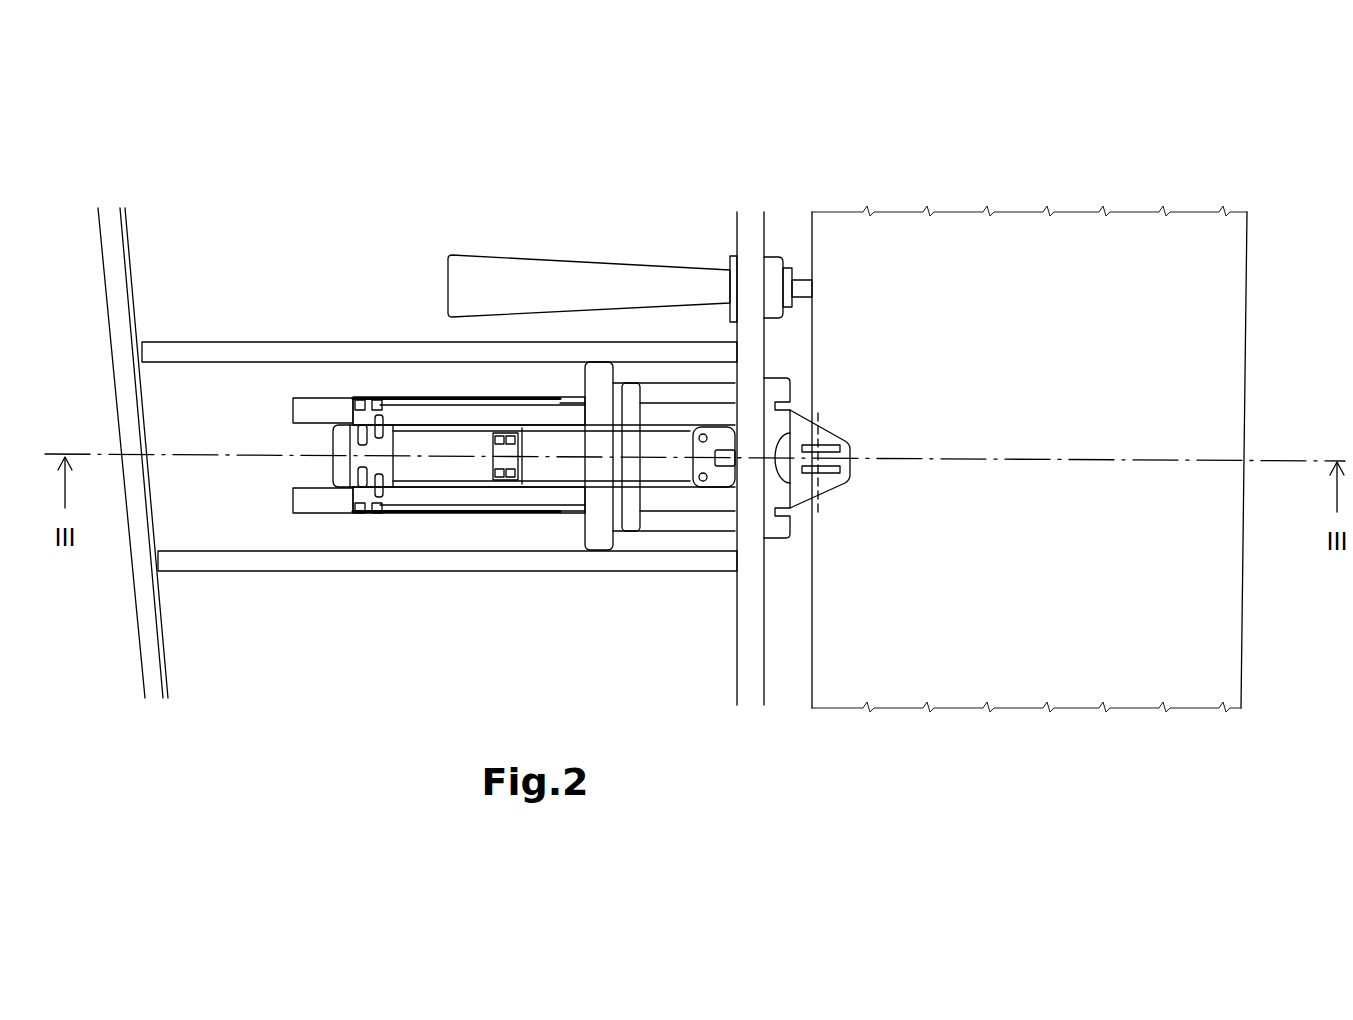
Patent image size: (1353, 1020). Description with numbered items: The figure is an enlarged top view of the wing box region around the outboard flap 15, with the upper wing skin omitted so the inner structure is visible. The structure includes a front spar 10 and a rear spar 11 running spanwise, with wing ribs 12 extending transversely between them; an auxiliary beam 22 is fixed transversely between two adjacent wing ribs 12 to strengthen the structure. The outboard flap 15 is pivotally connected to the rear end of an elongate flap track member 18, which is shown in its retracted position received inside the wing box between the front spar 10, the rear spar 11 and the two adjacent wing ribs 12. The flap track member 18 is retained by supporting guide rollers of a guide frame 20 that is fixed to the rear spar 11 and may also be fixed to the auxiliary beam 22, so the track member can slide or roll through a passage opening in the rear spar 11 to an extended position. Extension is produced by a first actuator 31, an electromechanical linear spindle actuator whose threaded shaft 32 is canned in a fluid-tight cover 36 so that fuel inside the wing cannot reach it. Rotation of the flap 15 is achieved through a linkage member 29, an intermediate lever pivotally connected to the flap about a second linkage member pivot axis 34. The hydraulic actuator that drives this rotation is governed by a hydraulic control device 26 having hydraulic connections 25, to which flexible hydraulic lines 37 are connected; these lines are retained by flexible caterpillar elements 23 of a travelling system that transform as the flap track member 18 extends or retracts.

The front spar 10 is at (147, 632).
The rear spar 11 is at (743, 663).
The wing ribs 12 is at (203, 352).
The outboard flap 15 is at (1128, 240).
The flap track member 18 is at (403, 415).
The guide frame 20 is at (630, 510).
The auxiliary beam 22 is at (600, 522).
The flexible caterpillar elements 23 is at (308, 413).
The hydraulic connections 25 is at (380, 507).
The hydraulic control device 26 is at (438, 468).
The linkage member 29 is at (792, 545).
The first actuator 31 is at (602, 255).
The threaded shaft 32 is at (802, 287).
The second linkage member pivot axis 34 is at (823, 417).
The fluid-tight cover 36 is at (508, 277).
The flexible hydraulic lines 37 is at (352, 507).